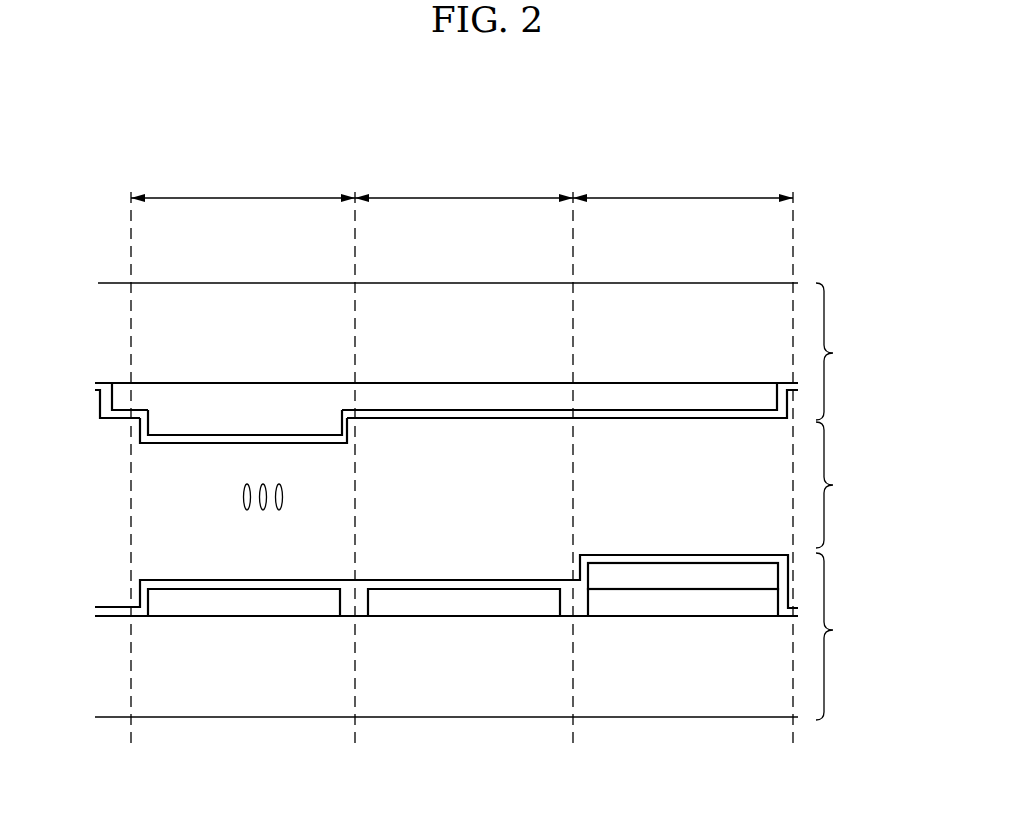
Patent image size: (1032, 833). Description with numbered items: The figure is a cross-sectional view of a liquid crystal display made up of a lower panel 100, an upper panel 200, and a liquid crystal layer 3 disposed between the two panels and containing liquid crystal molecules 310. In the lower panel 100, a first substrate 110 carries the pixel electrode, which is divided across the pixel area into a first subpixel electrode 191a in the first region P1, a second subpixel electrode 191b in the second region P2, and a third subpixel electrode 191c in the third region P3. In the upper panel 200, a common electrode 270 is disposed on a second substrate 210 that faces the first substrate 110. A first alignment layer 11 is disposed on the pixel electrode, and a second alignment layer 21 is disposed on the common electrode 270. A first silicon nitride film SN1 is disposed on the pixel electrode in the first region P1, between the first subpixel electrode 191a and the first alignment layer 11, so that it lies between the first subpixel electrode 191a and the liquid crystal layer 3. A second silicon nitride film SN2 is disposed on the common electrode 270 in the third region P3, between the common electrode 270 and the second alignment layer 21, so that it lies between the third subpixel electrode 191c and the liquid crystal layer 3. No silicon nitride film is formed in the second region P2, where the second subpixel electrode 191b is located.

The first region P1 is at (683, 458).
The second region P2 is at (464, 458).
The third region P3 is at (243, 458).
The second substrate 210 is at (242, 310).
The common electrode 270 is at (644, 393).
The second alignment layer 21 is at (465, 418).
The second silicon nitride film SN2 is at (199, 427).
The upper panel 200 is at (847, 351).
The liquid crystal molecules 310 is at (287, 505).
The liquid crystal layer 3 is at (833, 485).
The first alignment layer 11 is at (437, 582).
The first silicon nitride film SN1 is at (652, 575).
The first subpixel electrode 191a is at (623, 608).
The second subpixel electrode 191b is at (447, 608).
The third subpixel electrode 191c is at (226, 608).
The lower panel 100 is at (486, 636).
The first substrate 110 is at (737, 707).